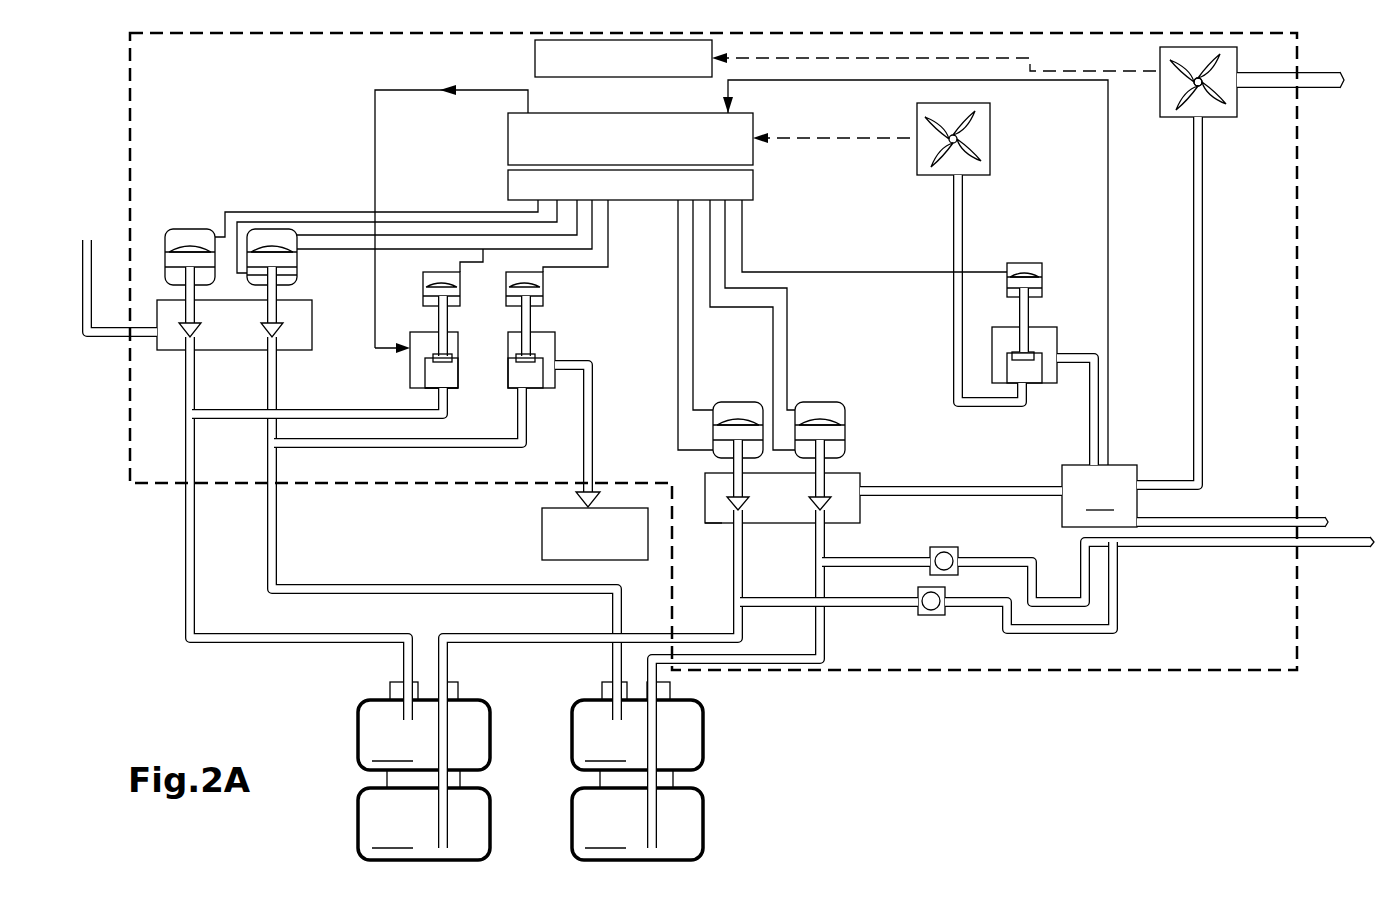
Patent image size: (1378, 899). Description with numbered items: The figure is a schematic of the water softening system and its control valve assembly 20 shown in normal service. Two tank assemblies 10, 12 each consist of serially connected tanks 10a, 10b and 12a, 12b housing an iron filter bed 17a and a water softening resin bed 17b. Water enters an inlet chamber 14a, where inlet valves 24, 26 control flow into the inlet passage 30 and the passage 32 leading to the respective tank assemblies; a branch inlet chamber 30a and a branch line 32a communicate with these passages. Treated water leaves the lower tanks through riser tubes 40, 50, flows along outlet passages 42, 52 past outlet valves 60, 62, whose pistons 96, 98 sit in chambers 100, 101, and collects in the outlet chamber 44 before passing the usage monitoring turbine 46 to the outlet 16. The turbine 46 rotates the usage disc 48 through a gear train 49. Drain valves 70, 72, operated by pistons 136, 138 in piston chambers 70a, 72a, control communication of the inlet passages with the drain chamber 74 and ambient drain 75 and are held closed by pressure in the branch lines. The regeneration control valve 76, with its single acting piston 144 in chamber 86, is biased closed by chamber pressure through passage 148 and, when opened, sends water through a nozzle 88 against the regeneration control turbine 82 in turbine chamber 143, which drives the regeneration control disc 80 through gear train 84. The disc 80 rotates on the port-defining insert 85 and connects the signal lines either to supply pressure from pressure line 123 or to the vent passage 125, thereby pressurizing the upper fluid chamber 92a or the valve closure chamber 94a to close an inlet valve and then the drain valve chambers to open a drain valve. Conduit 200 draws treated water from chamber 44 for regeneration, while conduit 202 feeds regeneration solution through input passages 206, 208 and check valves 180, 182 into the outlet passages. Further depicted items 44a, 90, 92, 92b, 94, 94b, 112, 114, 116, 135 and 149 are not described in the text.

The tank assembly 10 is at (461, 758).
The upper tank section 10a is at (480, 698).
The lower tank section 10b is at (490, 822).
The tank assembly 12 is at (699, 771).
The upper tank section 12a is at (705, 720).
The lower tank section 12b is at (705, 825).
The inlet chamber 14a is at (157, 345).
The outlet 16 is at (1312, 70).
The iron filter bed 17a is at (501, 750).
The water softening resin bed 17b is at (501, 837).
The control valve assembly 20 is at (128, 122).
The inlet valve 24 is at (200, 338).
The inlet valve 26 is at (280, 338).
The inlet passage 30 is at (192, 570).
The branch inlet chamber 30a is at (232, 420).
The inlet passage 32 is at (315, 590).
The branch line 32a is at (315, 462).
The riser tube 40 is at (447, 743).
The outlet passage 42 is at (742, 560).
The outlet chamber 44 is at (1099, 496).
The outlet manifold port 44a is at (722, 522).
The usage monitoring turbine 46 is at (1205, 103).
The usage disc 48 is at (535, 62).
The gear train 49 is at (1047, 70).
The riser tube 50 is at (657, 743).
The outlet passage 52 is at (780, 660).
The outlet valve 60 is at (745, 507).
The outlet valve 62 is at (828, 505).
The drain valve 70 is at (448, 350).
The piston chamber 70a is at (423, 283).
The drain valve 72 is at (548, 322).
The drain valve opening chamber 72a is at (540, 278).
The drain chamber 74 is at (478, 382).
The ambient drain 75 is at (542, 532).
The regeneration control valve 76 is at (1025, 343).
The regeneration control disc 80 is at (757, 150).
The regeneration control turbine 82 is at (988, 122).
The gear train 84 is at (850, 140).
The port-defining insert 85 is at (757, 188).
The chamber 86 is at (1025, 262).
The nozzle 88 is at (200, 316).
The second inlet valve stem 90 is at (285, 313).
The first inlet valve 92 is at (190, 250).
The upper fluid chamber 92a is at (170, 232).
The inlet supply conduit 92b is at (167, 282).
The second inlet valve 94 is at (272, 257).
The valve closure chamber 94a is at (270, 240).
The second inlet valve lower port 94b is at (297, 275).
The piston 96 is at (742, 420).
The piston 98 is at (822, 420).
The piston chamber 100 is at (722, 410).
The piston chamber 101 is at (805, 412).
The delivery conduit 112 is at (945, 490).
The flow meter return conduit 114 is at (1204, 372).
The supply flow meter 116 is at (1232, 95).
The pressure line 123 is at (805, 82).
The drain or vent passage 125 is at (442, 88).
The drain conduit 135 is at (598, 415).
The piston 136 is at (448, 275).
The piston 138 is at (506, 290).
The turbine chamber 143 is at (998, 156).
The single acting piston 144 is at (1042, 282).
The passage 148 is at (1092, 390).
The regeneration inlet conduit 149 is at (963, 228).
The check valve 180 is at (933, 612).
The check valve 182 is at (950, 570).
The conduit 200 is at (1315, 512).
The conduit 202 is at (1314, 570).
The regeneration solution input passage 206 is at (1067, 642).
The regeneration solution input passage 208 is at (972, 555).